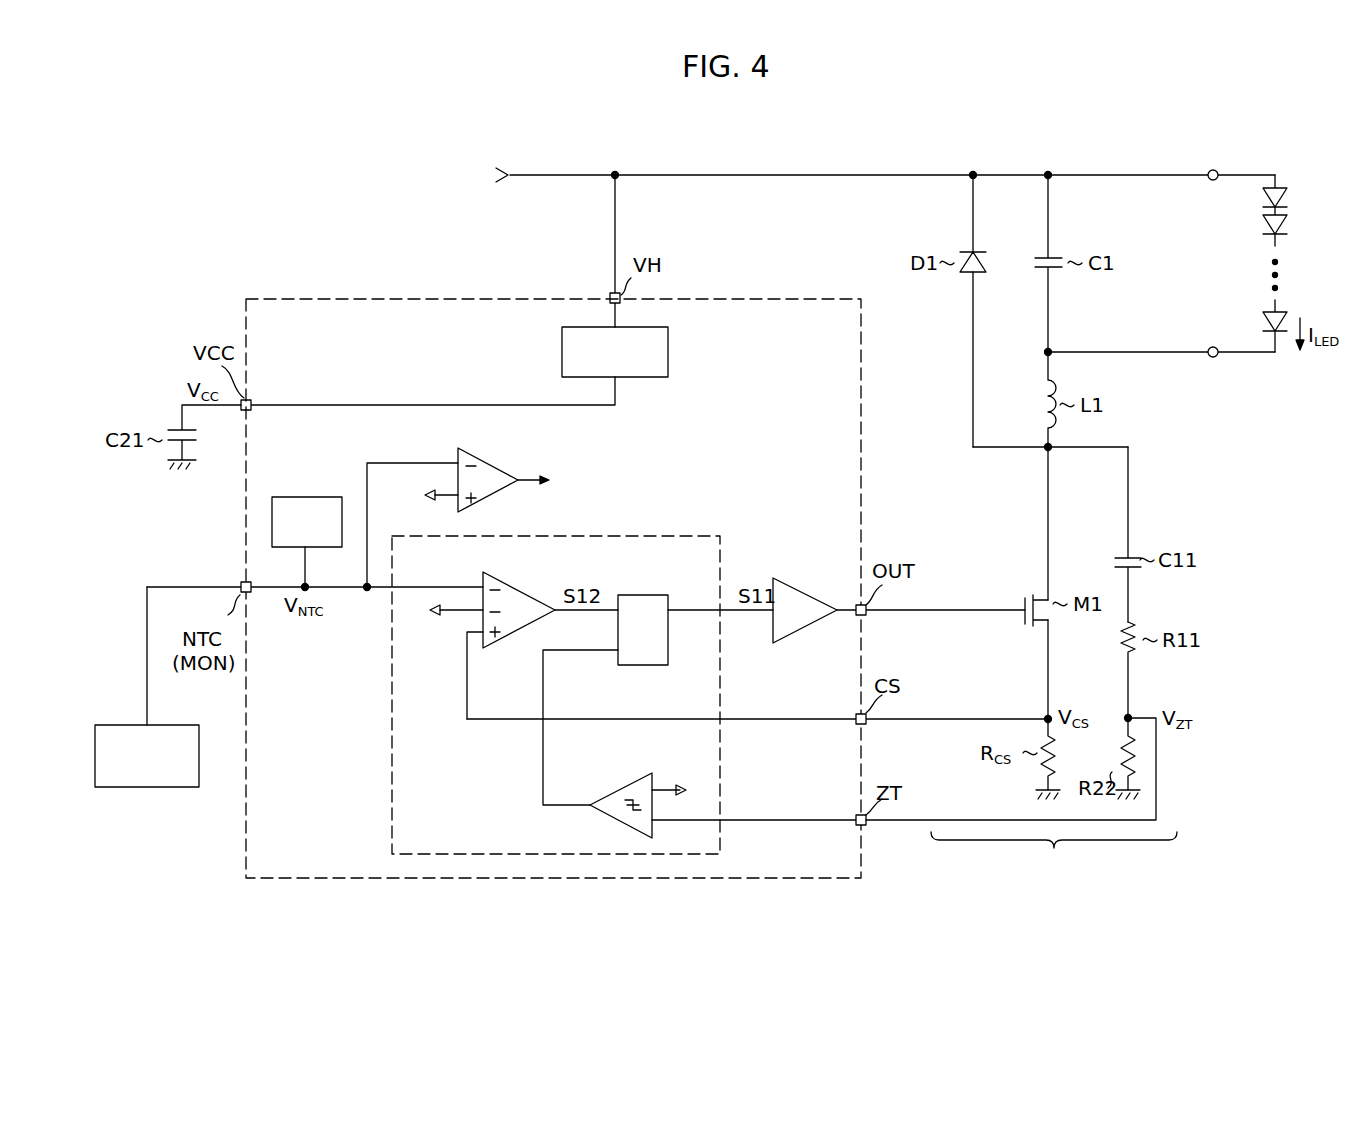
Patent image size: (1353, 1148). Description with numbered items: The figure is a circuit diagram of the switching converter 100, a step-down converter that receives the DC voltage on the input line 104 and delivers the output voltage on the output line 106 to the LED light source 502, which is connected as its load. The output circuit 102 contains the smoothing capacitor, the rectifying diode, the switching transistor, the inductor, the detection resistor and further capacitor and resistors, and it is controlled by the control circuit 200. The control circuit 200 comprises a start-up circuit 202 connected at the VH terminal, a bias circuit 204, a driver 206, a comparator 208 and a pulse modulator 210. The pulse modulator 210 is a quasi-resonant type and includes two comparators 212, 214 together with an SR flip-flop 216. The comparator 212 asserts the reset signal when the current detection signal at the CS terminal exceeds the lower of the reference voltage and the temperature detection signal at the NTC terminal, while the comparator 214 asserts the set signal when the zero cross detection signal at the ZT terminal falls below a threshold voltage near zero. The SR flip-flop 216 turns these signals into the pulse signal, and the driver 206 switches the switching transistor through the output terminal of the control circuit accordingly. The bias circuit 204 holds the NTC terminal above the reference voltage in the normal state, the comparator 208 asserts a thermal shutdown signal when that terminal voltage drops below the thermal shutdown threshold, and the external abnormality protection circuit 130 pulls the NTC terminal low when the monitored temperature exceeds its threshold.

The switching converter 100 is at (1065, 120).
The output circuit 102 is at (1054, 856).
The input line 104 is at (553, 172).
The output line 106 is at (1142, 354).
The abnormality protection circuit 130 is at (154, 787).
The control circuit 200 is at (362, 299).
The start-up circuit 202 is at (670, 350).
The bias circuit 204 is at (308, 497).
The driver 206 is at (808, 582).
The comparator 208 is at (494, 465).
The pulse modulator 210 is at (676, 536).
The comparator 212 is at (537, 571).
The comparator 214 is at (620, 762).
The SR flip-flop 216 is at (640, 595).
The LED light source 502 is at (1294, 261).